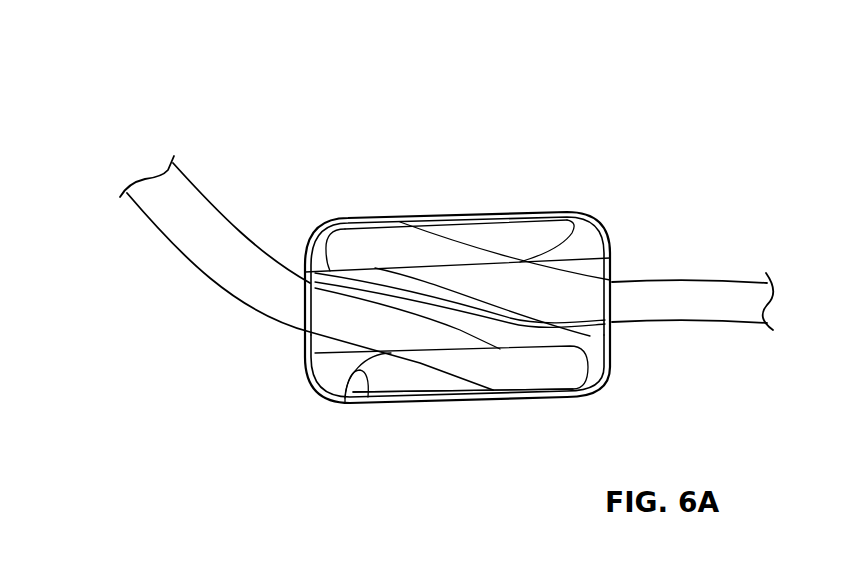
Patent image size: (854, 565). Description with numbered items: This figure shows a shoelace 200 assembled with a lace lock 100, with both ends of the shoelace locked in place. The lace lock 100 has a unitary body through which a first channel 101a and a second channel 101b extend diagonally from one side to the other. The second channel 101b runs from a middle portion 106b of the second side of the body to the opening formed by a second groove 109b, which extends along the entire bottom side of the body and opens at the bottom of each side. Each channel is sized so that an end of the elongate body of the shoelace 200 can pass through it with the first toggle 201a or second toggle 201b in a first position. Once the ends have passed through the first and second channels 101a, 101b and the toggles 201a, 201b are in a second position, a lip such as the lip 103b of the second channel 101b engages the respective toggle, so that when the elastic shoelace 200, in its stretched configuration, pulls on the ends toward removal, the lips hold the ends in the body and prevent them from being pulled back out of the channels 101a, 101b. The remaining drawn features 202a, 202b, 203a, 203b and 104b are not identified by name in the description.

The lace lock 100 is at (156, 63).
The shoelace 200 is at (203, 176).
The first toggle 201a is at (451, 164).
The second toggle 201b is at (525, 402).
The first outer wall 202a is at (373, 217).
The second outer wall 202b is at (588, 368).
The first channel 203a is at (513, 217).
The second channel 203b is at (383, 387).
The first channel 101a is at (563, 272).
The second channel 101b is at (345, 332).
The lip of the second channel 103b is at (458, 340).
The cable exit portion 104b is at (619, 342).
The middle portion of the second side 106b is at (312, 298).
The second groove 109b is at (337, 372).